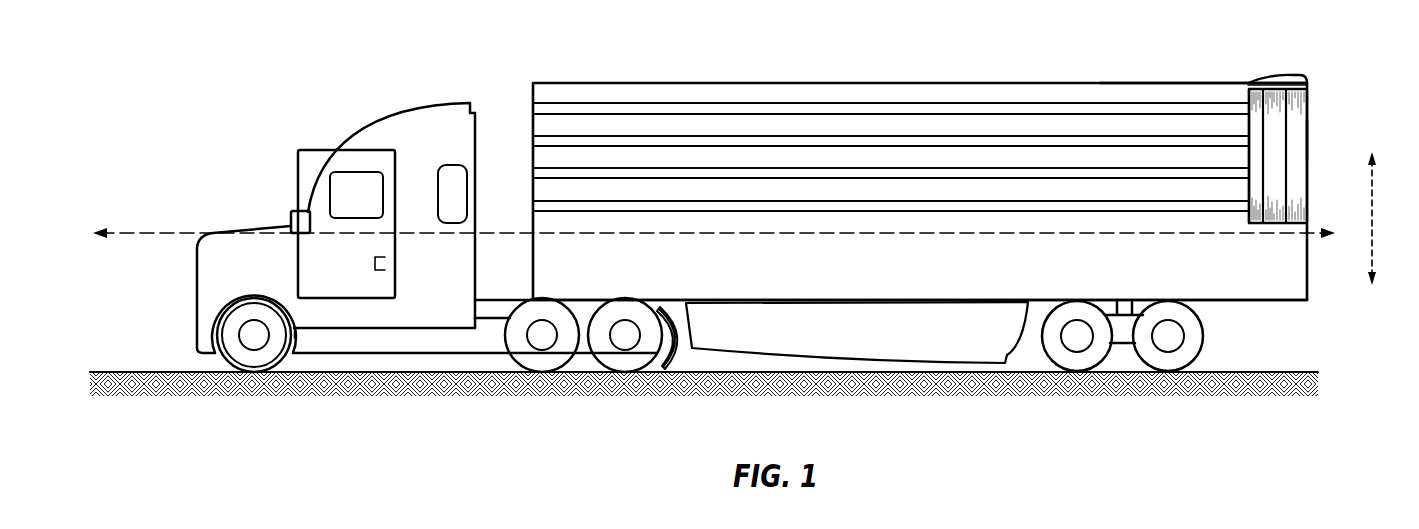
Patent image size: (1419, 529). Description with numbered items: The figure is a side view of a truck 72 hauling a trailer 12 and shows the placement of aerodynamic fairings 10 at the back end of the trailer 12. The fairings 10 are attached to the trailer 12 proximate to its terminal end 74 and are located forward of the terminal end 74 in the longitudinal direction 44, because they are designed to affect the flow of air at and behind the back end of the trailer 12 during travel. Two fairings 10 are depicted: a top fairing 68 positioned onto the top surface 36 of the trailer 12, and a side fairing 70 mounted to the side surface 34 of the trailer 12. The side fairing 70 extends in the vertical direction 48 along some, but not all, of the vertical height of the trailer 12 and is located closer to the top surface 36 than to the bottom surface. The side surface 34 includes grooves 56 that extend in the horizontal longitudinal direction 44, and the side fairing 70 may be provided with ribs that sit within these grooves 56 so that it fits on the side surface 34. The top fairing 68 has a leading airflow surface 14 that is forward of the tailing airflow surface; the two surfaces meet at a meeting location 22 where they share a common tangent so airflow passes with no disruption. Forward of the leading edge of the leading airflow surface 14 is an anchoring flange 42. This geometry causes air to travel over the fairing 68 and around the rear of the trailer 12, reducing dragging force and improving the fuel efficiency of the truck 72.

The fairing 10 is at (1293, 147).
The trailer 12 is at (920, 205).
The leading airflow surface 14 is at (1265, 78).
The meeting location 22 is at (1288, 73).
The side surface 34 is at (996, 281).
The top surface 36 is at (1147, 83).
The anchoring flange 42 is at (1248, 80).
The longitudinal direction 44 is at (907, 233).
The vertical direction 48 is at (1373, 218).
The grooves 56 is at (773, 140).
The top fairing 68 is at (1316, 44).
The side fairing 70 is at (1293, 149).
The truck 72 is at (398, 112).
The terminal end 74 is at (1310, 140).